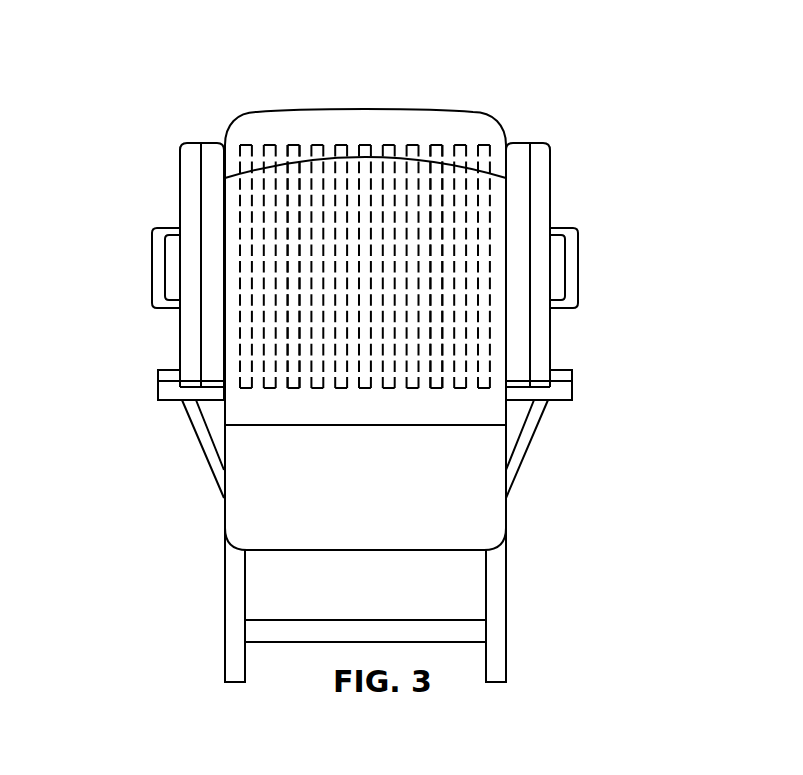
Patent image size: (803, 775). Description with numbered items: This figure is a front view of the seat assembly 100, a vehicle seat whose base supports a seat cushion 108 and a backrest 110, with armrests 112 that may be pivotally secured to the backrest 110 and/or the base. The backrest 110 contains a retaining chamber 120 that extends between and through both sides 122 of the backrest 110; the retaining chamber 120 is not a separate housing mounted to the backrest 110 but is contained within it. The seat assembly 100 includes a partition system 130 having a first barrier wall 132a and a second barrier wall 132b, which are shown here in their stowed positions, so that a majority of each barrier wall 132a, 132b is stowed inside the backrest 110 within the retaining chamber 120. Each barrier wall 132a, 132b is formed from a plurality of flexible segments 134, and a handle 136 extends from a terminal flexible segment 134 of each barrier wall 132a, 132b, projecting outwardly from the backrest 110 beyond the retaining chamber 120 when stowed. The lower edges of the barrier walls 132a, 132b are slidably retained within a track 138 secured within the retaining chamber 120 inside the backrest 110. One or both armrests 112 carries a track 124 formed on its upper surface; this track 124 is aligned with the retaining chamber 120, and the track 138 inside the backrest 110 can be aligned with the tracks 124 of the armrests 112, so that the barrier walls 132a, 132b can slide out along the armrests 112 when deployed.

The seat assembly 100 is at (589, 70).
The seat cushion 108 is at (280, 427).
The backrest 110 is at (507, 143).
The armrests 112 is at (172, 370).
The retaining chamber 120 is at (293, 185).
The sides of the backrest 122 is at (193, 143).
The track 124 is at (192, 380).
The partition system 130 is at (165, 175).
The first barrier wall 132a is at (177, 210).
The second barrier wall 132b is at (552, 200).
The flexible segments 134 is at (323, 183).
The handle 136 is at (150, 267).
The track 138 is at (408, 383).